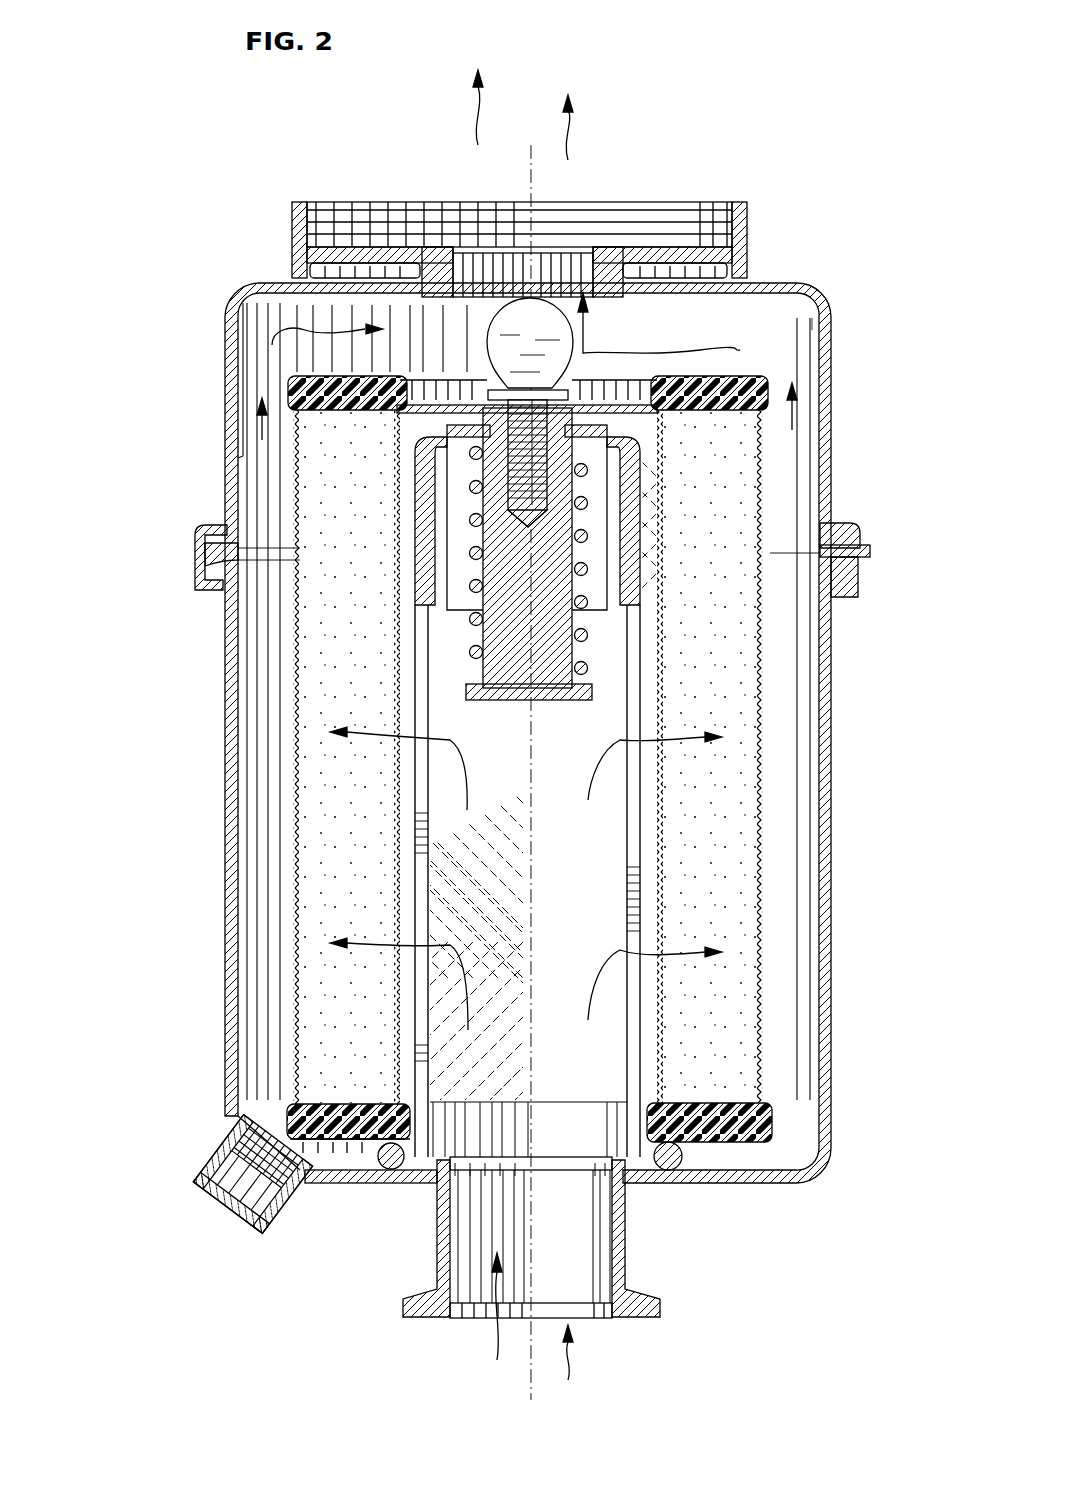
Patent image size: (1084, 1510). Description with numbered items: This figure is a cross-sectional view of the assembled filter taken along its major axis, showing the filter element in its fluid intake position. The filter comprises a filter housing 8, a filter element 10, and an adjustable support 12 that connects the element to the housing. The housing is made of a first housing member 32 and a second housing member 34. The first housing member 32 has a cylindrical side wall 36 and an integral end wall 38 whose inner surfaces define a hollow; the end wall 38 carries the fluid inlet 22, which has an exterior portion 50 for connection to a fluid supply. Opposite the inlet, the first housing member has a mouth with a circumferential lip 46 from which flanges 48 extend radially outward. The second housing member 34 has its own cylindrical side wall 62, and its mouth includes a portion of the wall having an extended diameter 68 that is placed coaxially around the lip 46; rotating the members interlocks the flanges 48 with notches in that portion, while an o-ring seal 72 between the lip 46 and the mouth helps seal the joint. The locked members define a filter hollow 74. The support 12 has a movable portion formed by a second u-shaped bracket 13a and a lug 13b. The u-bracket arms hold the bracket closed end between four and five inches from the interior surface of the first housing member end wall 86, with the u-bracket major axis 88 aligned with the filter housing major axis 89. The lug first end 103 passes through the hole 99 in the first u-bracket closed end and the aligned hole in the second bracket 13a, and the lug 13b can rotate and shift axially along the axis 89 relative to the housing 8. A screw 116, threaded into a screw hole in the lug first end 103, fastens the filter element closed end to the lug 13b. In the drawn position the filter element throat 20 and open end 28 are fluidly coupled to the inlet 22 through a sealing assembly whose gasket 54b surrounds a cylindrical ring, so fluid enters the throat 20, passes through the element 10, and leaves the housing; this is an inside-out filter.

The filter housing 8 is at (842, 690).
The filter element 10 is at (763, 797).
The adjustable support 12 is at (595, 513).
The second u-shaped bracket 13a is at (390, 430).
The lug 13b is at (482, 626).
The filter element throat 20 is at (443, 833).
The fluid inlet 22 is at (601, 1331).
The filter element open end 28 is at (275, 1090).
The first housing member 32 is at (828, 985).
The second housing member 34 is at (828, 360).
The cylindrical side wall 36 is at (230, 900).
The end wall 38 is at (377, 1187).
The circumferential lip 46 is at (210, 590).
The flanges 48 is at (832, 558).
The exterior portion 50 is at (438, 1250).
The gasket 54b is at (693, 1162).
The cylindrical side wall 62 is at (830, 388).
The portion of the cylindrical wall having an extended diameter 68 is at (208, 565).
The o-ring seal 72 is at (836, 535).
The filter hollow 74 is at (258, 786).
The interior surface of the first housing member end wall 86 is at (755, 1175).
The u-bracket major axis 88 is at (533, 1177).
The filter housing major axis 89 is at (533, 1345).
The hole 99 is at (737, 377).
The lug first end 103 is at (455, 428).
The screw 116 is at (530, 300).